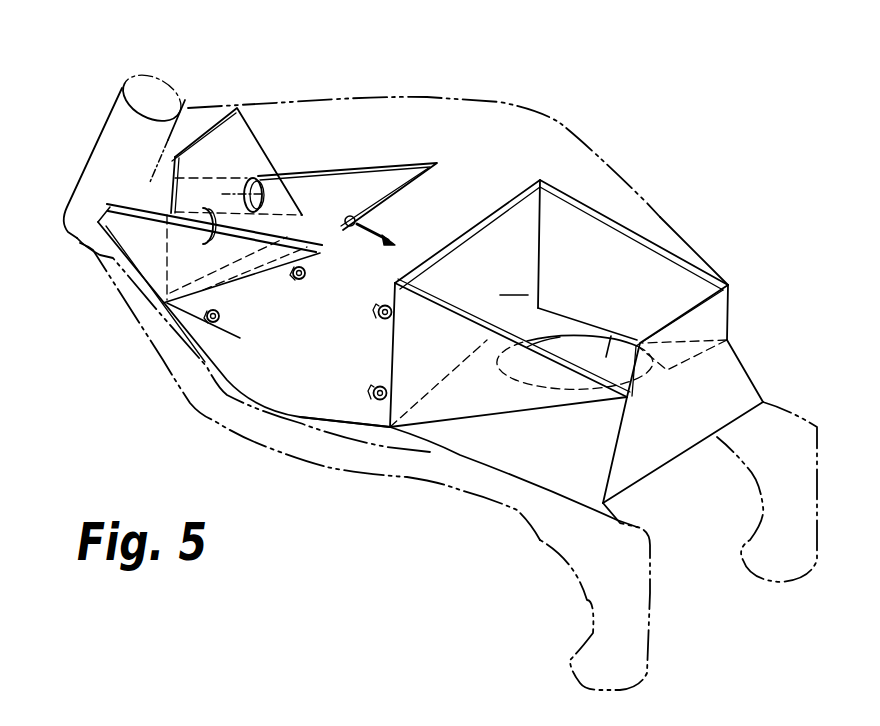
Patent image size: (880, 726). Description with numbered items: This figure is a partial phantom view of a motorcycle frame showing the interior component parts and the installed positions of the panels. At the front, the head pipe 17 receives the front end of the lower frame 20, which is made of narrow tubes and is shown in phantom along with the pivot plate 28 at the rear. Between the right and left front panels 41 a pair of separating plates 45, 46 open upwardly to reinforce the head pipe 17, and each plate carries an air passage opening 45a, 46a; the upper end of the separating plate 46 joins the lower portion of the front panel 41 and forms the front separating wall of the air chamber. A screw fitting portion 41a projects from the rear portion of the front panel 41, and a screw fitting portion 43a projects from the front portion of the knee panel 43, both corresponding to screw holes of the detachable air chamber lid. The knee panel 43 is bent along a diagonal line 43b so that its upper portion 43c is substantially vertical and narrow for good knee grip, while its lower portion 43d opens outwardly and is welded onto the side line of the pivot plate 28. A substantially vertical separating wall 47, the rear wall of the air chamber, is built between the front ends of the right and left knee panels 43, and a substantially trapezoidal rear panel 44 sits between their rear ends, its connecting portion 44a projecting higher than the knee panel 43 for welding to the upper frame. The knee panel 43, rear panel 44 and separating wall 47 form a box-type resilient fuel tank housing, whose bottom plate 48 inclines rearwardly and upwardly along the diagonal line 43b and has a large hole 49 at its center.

The head pipe 17 is at (110, 125).
The lower frame 20 is at (185, 358).
The pivot plate 28 is at (627, 647).
The front panel 41 is at (143, 263).
The screw fitting portion 41a is at (296, 281).
The knee panel 43 is at (448, 526).
The screw fitting portion 43a is at (373, 320).
The diagonal line 43b is at (553, 400).
The upper portion 43c is at (427, 420).
The lower portion 43d is at (507, 433).
The rear panel 44 is at (743, 370).
The connecting portion 44a is at (720, 305).
The separating plate 45 is at (217, 138).
The air passage opening 45a is at (260, 177).
The separating plate 46 is at (405, 197).
The air passage opening 46a is at (350, 215).
The separating wall 47 is at (508, 232).
The bottom plate 48 is at (558, 323).
The large hole 49 is at (607, 357).